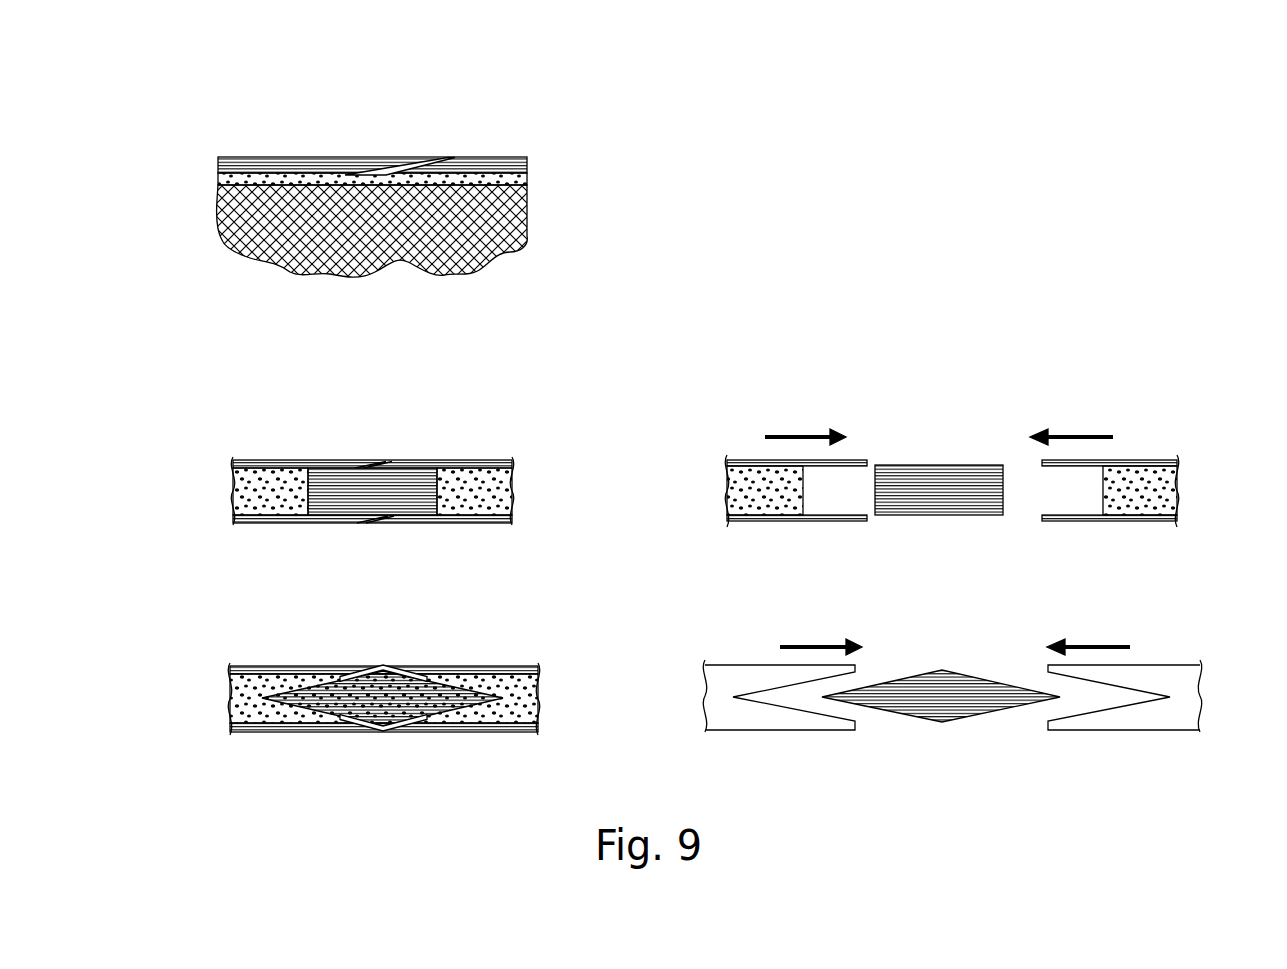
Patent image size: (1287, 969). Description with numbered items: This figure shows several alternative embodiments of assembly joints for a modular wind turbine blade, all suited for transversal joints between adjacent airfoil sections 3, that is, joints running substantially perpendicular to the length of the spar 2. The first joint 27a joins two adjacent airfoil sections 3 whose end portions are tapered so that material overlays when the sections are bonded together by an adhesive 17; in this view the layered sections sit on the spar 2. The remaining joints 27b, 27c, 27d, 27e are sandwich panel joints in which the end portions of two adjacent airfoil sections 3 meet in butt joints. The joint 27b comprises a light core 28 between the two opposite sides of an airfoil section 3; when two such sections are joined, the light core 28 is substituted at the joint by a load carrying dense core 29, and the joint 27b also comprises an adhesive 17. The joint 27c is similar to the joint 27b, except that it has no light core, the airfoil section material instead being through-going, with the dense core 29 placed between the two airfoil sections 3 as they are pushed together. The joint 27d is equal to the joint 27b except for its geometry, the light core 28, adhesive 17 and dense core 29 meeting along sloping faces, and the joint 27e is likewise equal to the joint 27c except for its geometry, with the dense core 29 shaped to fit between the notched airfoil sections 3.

The spar 2 is at (240, 225).
The airfoil section 3 is at (278, 168).
The adhesive 17 is at (394, 165).
The joint 27a is at (572, 113).
The joint 27b is at (515, 378).
The joint 27c is at (1122, 390).
The joint 27d is at (183, 648).
The joint 27e is at (1165, 630).
The light core 28 is at (262, 498).
The load carrying dense core 29 is at (345, 483).